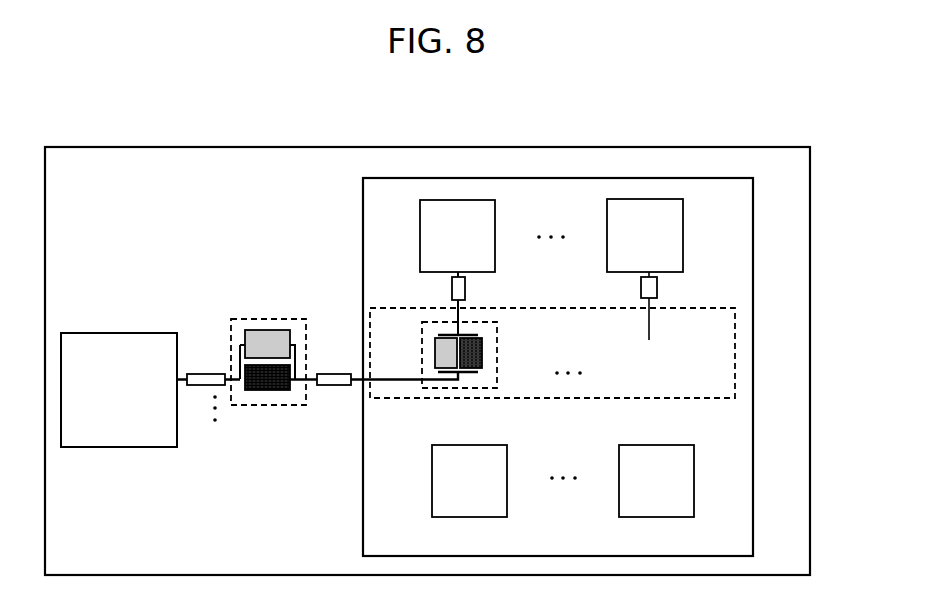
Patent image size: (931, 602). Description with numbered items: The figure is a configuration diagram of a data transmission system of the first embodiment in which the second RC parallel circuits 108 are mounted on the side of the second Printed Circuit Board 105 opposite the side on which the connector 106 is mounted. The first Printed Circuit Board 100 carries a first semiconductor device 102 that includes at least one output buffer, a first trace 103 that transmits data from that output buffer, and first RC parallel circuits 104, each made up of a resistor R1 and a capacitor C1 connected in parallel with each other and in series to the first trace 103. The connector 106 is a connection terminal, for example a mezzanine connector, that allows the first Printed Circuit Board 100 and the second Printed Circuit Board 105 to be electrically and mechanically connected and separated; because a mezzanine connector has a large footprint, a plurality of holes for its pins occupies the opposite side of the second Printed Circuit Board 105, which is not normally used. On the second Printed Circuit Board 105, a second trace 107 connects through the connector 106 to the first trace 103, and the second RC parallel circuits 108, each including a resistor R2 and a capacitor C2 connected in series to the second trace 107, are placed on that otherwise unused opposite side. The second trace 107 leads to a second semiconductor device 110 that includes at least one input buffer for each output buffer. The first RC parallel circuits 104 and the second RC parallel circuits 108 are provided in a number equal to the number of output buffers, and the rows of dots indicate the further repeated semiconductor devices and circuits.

The first Printed Circuit Board 100 is at (770, 148).
The first semiconductor device 102 is at (110, 333).
The first trace 103 is at (205, 373).
The first RC parallel circuits 104 is at (298, 318).
The second Printed Circuit Board 105 is at (646, 177).
The connector 106 is at (708, 308).
The second trace 107 is at (640, 287).
The second RC parallel circuits 108 is at (424, 389).
The second semiconductor device 110 is at (683, 235).
The capacitor C1 is at (267, 328).
The resistor R1 is at (272, 392).
The capacitor C2 is at (434, 352).
The resistor R2 is at (483, 352).